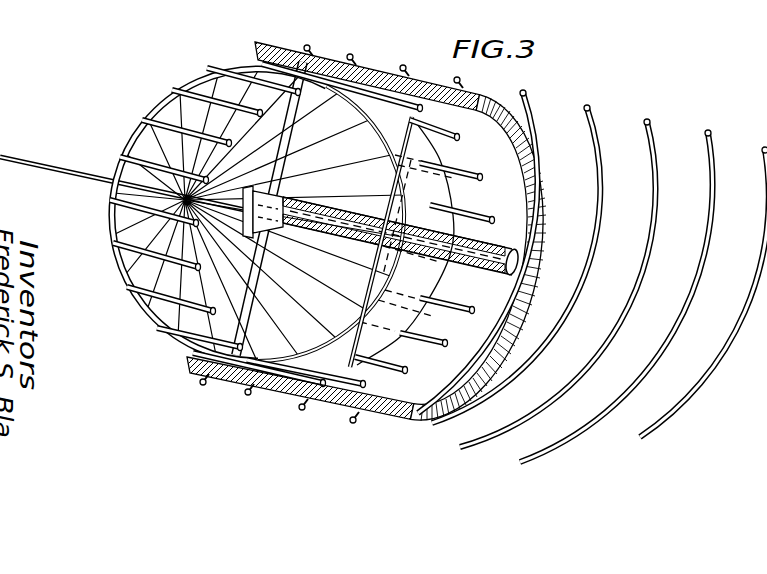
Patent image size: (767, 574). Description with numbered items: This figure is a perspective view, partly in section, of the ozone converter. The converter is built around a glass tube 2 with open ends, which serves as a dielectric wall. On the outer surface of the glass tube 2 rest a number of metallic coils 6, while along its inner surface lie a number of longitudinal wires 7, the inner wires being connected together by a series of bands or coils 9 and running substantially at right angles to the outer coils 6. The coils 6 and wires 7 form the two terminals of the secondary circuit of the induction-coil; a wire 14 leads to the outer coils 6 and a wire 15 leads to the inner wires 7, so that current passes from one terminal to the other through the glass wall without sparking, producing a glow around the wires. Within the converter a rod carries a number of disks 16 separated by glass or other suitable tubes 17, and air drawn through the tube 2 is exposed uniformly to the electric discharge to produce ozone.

The glass tube 2 is at (372, 72).
The metallic coils 6 is at (351, 56).
The longitudinal wires 7 is at (404, 100).
The bands or coils 9 is at (196, 80).
The wire 14 is at (494, 268).
The wire 15 is at (58, 170).
The disks 16 is at (446, 160).
The tubes 17 is at (333, 216).